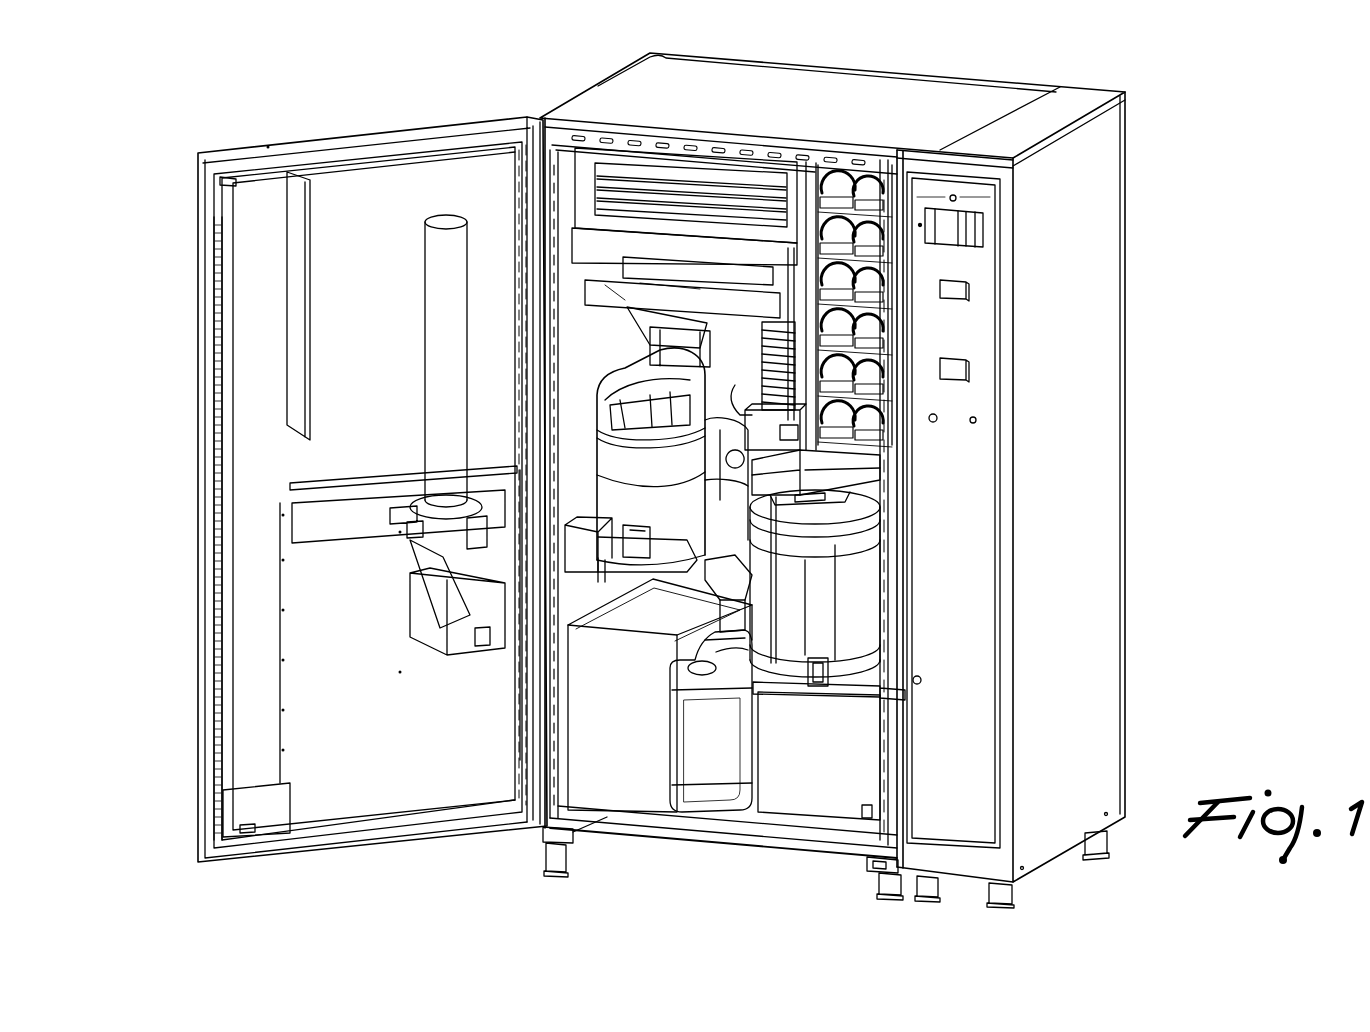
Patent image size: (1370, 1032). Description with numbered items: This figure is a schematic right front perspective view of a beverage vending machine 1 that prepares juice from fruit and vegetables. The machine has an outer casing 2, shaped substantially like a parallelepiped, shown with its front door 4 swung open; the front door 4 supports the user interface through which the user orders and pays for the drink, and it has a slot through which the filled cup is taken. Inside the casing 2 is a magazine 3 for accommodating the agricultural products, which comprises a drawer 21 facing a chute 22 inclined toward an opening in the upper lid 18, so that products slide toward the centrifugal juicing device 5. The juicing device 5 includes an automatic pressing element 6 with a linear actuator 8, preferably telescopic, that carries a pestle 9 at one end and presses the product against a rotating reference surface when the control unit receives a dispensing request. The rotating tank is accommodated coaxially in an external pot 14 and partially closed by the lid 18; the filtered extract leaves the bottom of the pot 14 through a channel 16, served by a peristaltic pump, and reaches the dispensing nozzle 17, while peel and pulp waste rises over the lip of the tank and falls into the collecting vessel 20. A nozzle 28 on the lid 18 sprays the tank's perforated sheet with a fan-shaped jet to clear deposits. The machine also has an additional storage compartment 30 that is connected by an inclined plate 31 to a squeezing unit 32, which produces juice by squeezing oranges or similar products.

The beverage vending machine 1 is at (1185, 210).
The outer casing 2 is at (800, 97).
The magazine 3 is at (880, 217).
The front door 4 is at (345, 383).
The centrifugal juicing device 5 is at (837, 668).
The automatic pressing element 6 is at (747, 360).
The linear actuator 8 is at (770, 350).
The pestle 9 is at (745, 462).
The external pot 14 is at (768, 540).
The channel 16 is at (740, 548).
The nozzle 17 is at (752, 540).
The upper lid 18 is at (855, 506).
The vessel 20 is at (857, 577).
The drawer 21 is at (850, 176).
The chute 22 is at (760, 468).
The nozzle 28 is at (826, 466).
The additional storage compartment 30 is at (637, 173).
The inclined plate 31 is at (664, 272).
The squeezing unit 32 is at (595, 382).